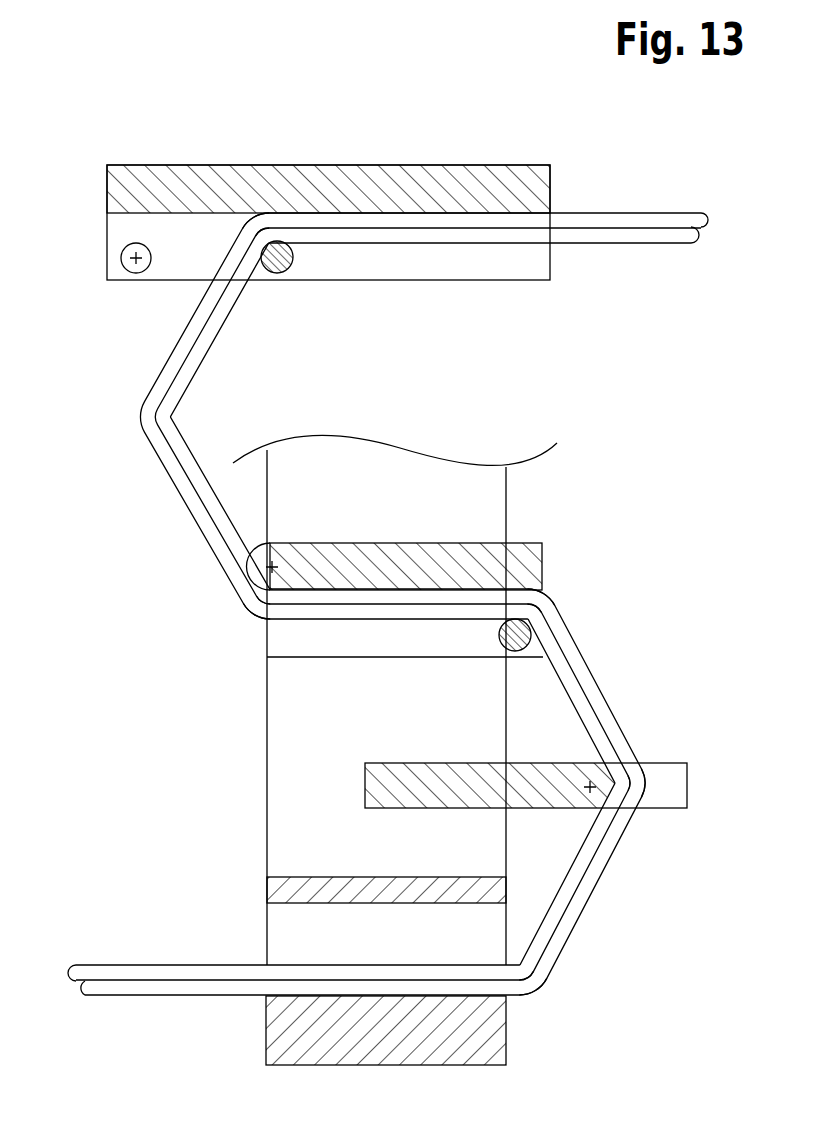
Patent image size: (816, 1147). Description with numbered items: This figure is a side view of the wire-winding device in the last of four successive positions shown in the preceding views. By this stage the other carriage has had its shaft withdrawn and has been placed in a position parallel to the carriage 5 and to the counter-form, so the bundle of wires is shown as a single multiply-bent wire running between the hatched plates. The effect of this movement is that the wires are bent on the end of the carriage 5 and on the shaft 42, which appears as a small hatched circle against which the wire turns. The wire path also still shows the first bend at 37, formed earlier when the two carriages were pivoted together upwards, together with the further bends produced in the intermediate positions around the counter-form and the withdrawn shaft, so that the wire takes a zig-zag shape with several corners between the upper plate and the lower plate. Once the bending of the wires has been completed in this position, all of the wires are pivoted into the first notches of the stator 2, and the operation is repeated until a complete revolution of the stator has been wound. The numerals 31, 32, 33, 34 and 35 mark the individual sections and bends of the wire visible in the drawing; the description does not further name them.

The stator 2 is at (389, 1036).
The carriage 5 is at (363, 572).
The spring wire contact 31 is at (160, 421).
The lower bend section 32 is at (522, 985).
The outer bend 33 is at (635, 793).
The middle bend section 34 is at (253, 606).
The upper bend section 35 is at (267, 233).
The first bend 37 is at (557, 610).
The shaft 42 is at (290, 258).